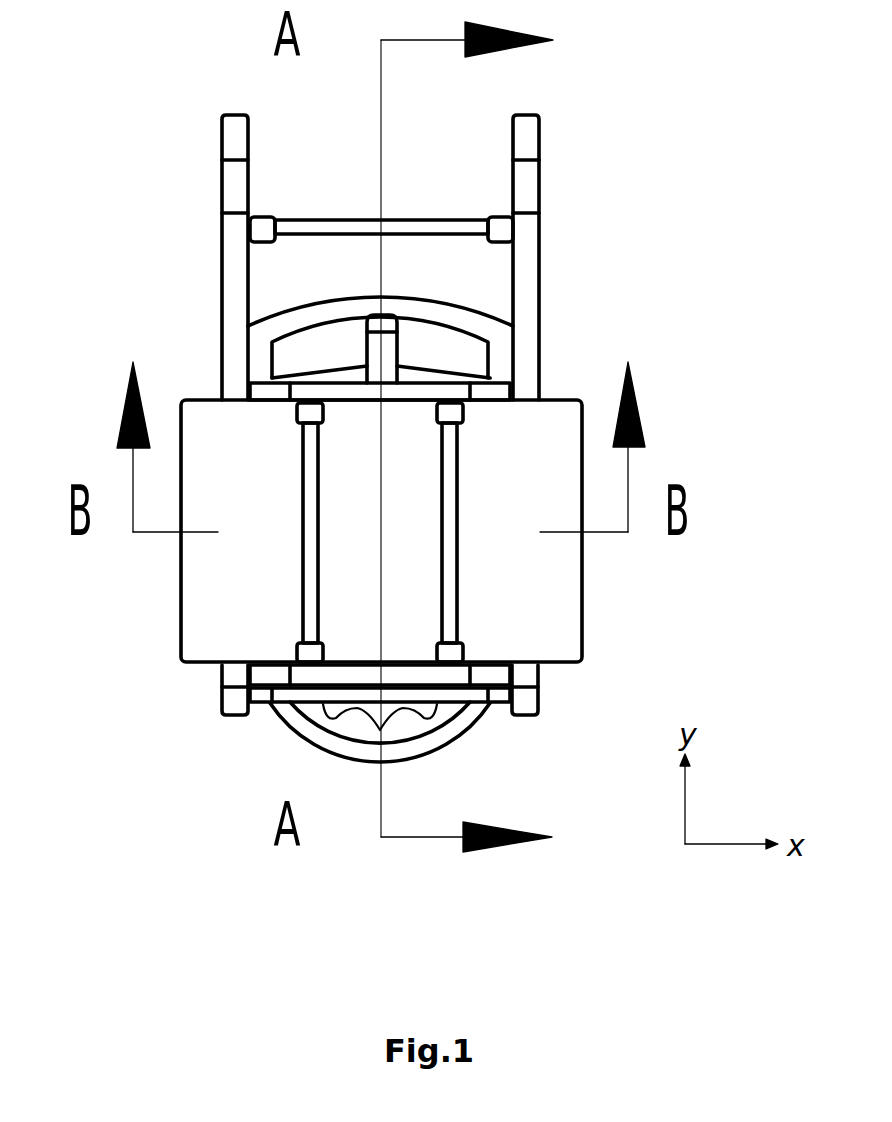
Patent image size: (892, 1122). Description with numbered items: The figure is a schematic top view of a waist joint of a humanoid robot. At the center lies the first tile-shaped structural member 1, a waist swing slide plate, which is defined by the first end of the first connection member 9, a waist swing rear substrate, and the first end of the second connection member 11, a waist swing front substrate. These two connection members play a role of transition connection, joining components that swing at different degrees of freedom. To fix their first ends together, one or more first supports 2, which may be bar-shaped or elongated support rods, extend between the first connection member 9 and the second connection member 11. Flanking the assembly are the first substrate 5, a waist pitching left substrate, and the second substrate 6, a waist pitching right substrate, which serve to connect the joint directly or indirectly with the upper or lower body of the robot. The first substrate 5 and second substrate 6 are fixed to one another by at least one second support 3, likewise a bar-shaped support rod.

The first tile-shaped structural member 1 is at (350, 457).
The first support 2 is at (291, 403).
The second support 3 is at (318, 139).
The first substrate 5 is at (169, 231).
The second substrate 6 is at (577, 239).
The first connection member 9 is at (423, 311).
The second connection member 11 is at (421, 729).